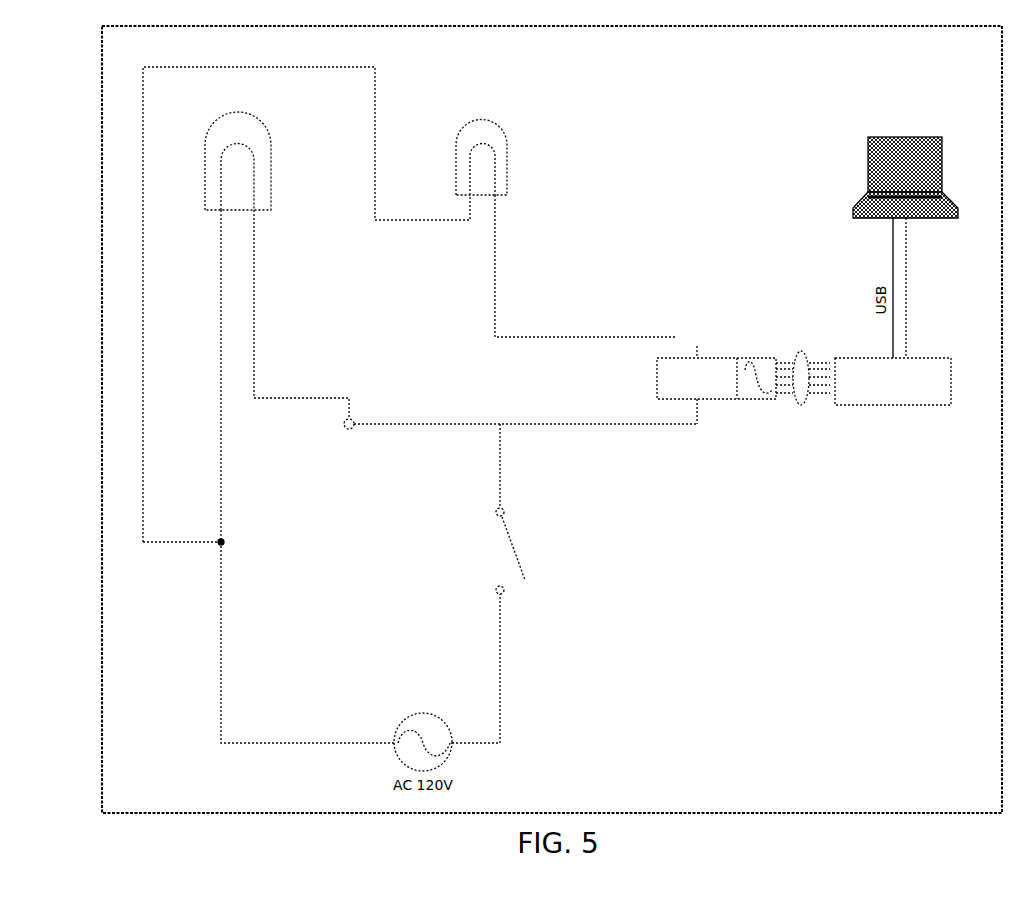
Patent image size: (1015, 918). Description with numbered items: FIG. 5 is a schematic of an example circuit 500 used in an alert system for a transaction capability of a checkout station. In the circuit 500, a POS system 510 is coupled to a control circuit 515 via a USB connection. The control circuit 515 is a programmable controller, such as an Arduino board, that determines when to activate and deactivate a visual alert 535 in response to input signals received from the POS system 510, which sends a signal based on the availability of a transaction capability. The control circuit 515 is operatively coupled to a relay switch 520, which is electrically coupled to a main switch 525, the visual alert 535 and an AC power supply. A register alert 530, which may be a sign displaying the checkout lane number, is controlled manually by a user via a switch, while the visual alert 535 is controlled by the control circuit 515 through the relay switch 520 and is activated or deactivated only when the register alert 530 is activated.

The circuit 500 is at (102, 162).
The POS system 510 is at (942, 147).
The control circuit 515 is at (952, 405).
The relay switch 520 is at (698, 337).
The main switch 525 is at (525, 543).
The register alert 530 is at (272, 210).
The visual alert 535 is at (507, 145).